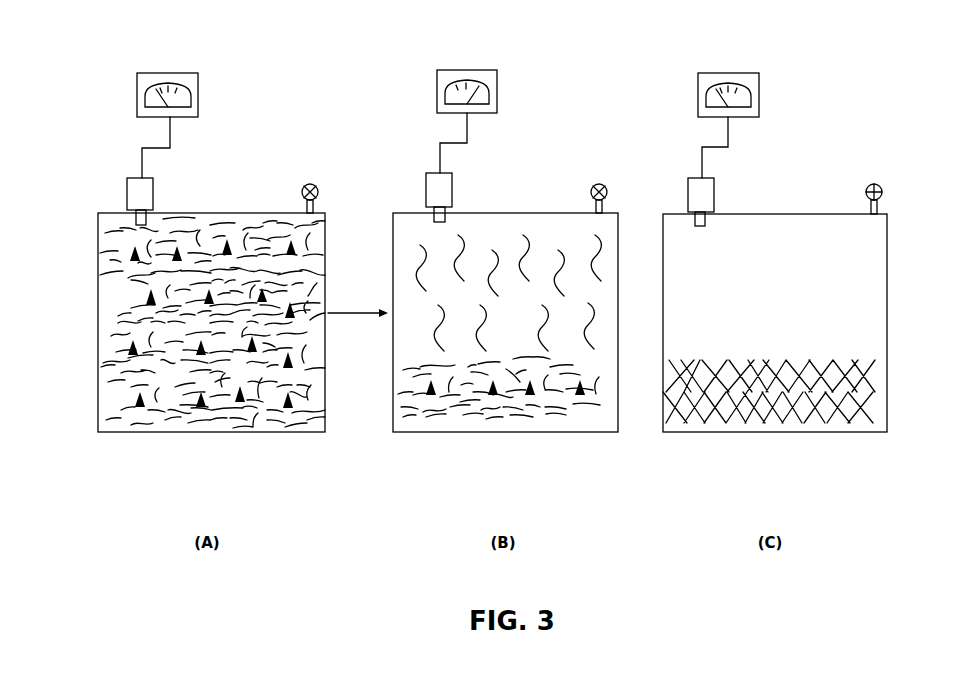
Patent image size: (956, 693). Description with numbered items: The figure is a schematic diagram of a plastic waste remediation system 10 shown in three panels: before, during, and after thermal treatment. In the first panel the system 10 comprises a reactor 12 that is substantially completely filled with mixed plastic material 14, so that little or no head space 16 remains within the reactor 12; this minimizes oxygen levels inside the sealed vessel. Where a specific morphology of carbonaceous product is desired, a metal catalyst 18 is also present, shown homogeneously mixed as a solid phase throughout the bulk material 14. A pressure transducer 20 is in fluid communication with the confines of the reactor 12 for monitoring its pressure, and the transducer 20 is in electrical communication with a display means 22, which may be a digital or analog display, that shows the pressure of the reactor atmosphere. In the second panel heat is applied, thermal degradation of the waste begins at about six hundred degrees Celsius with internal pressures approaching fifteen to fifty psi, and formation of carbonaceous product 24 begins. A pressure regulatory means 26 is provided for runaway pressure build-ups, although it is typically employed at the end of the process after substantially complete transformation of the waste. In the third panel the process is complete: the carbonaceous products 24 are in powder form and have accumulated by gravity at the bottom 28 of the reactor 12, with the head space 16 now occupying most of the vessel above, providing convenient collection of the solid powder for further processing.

The system 10 is at (474, 260).
The reactor 12 is at (113, 212).
The mixed plastic material 14 is at (257, 423).
The head space 16 is at (280, 220).
The metal catalyst 18 is at (148, 303).
The pressure transducer 20 is at (456, 170).
The display means 22 is at (177, 73).
The carbonaceous product 24 is at (508, 425).
The pressure regulatory means 26 is at (318, 186).
The bottom of the reactor 28 is at (120, 432).